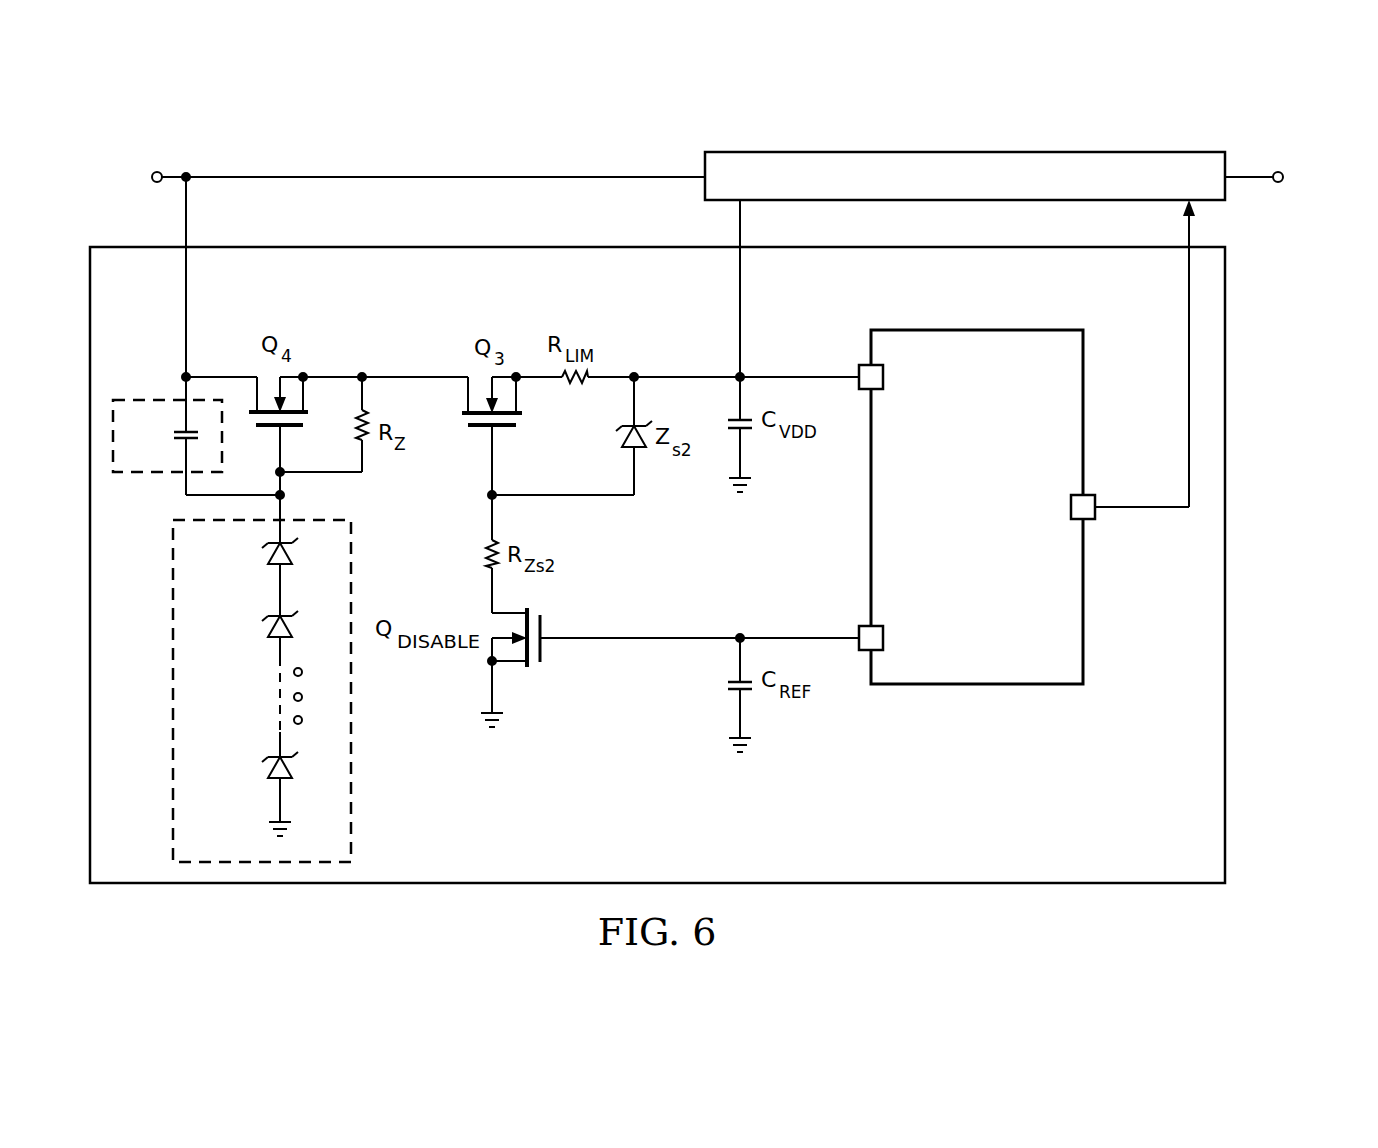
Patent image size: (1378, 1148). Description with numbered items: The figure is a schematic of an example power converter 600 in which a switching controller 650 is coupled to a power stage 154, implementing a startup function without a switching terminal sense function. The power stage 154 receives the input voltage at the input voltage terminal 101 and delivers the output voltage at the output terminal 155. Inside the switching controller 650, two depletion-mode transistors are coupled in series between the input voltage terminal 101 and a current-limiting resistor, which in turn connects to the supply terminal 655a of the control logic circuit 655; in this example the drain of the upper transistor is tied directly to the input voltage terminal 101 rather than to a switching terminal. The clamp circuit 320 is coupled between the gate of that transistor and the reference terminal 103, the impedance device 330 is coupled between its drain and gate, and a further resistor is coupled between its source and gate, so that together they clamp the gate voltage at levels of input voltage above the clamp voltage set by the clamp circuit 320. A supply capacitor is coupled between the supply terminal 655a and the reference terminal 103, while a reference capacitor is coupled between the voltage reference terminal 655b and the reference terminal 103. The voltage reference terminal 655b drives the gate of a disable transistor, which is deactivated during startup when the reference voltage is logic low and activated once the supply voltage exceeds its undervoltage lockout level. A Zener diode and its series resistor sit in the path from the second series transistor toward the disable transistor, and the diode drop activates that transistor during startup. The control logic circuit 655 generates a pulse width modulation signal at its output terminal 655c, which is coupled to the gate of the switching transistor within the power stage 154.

The power converter circuit 600 is at (320, 112).
The input voltage terminal 101 is at (155, 171).
The power stage 154 is at (967, 152).
The output terminal 155 is at (1279, 171).
The switching controller 650 is at (1234, 644).
The control logic circuit 655 is at (932, 555).
The VDD terminal 655a is at (866, 365).
The REF terminal 655b is at (866, 626).
The output terminal 655c is at (1090, 520).
The impedance device 330 is at (152, 472).
The clamp circuit 320 is at (198, 702).
The reference terminal 103 is at (272, 827).